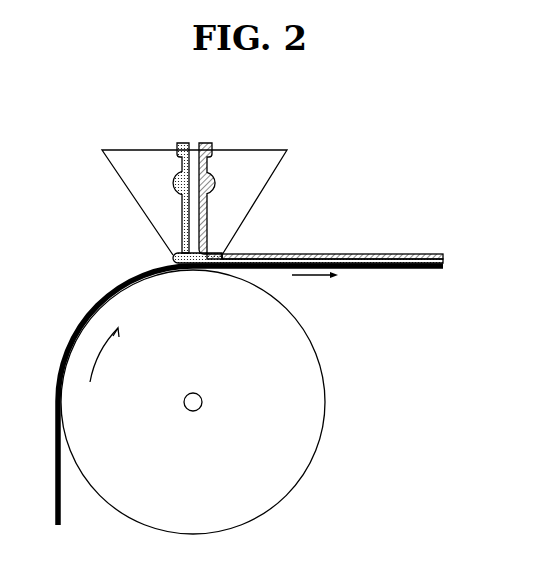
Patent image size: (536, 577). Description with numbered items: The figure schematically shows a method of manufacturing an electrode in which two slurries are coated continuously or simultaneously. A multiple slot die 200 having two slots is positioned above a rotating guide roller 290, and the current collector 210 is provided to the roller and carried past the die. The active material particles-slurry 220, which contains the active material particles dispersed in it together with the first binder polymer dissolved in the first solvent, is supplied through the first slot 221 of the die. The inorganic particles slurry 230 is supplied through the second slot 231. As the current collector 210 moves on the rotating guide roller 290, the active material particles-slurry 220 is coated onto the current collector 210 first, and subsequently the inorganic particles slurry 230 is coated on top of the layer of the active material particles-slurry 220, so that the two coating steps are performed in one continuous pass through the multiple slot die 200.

The multiple slot die 200 is at (296, 142).
The current collector 210 is at (387, 269).
The active material particles-slurry 220 is at (309, 259).
The first slot 221 is at (181, 148).
The inorganic particles slurry 230 is at (261, 254).
The second slot 231 is at (208, 148).
The rotating guide roller 290 is at (325, 385).